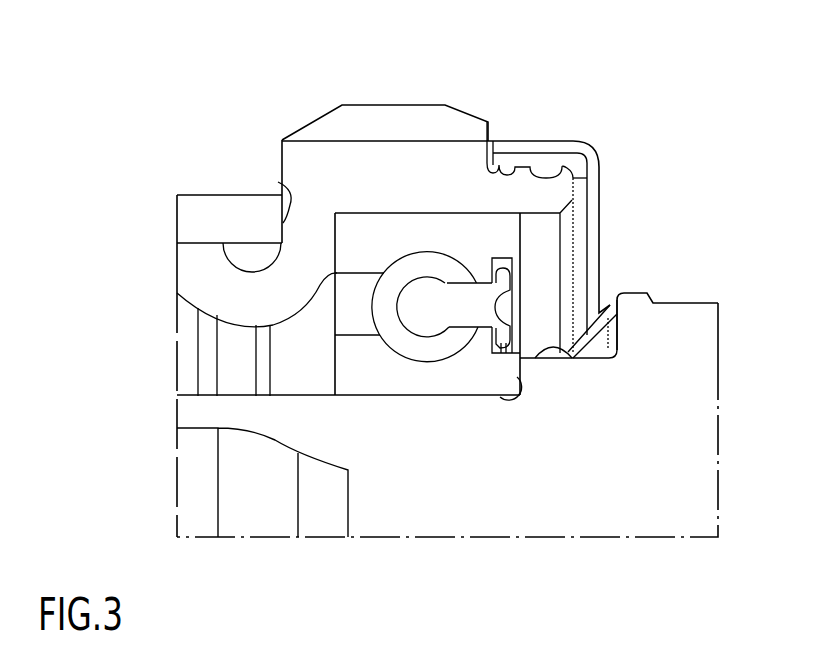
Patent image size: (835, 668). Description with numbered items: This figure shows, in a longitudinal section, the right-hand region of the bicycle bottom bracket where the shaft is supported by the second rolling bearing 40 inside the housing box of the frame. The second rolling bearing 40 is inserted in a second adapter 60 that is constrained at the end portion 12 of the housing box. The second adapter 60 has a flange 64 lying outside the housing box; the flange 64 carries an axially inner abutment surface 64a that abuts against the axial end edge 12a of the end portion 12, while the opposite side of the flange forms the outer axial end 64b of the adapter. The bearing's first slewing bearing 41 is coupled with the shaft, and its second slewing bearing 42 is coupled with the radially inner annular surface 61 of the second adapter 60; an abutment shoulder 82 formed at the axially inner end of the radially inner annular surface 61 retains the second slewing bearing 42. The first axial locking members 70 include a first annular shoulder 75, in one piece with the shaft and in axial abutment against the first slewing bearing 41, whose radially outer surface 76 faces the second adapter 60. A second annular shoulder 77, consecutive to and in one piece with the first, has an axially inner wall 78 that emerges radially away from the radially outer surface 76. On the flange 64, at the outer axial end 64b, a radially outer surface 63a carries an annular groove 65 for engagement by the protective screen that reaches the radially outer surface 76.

The end portion of the housing box 12 is at (188, 222).
The axial end edge 12a is at (227, 225).
The abutment shoulder 82 is at (337, 263).
The flange 64 is at (313, 165).
The axially inner abutment surface 64a is at (278, 182).
The outer axial end 64b is at (563, 185).
The second adapter 60 is at (430, 105).
The radially inner annular surface 61 is at (382, 207).
The second slewing bearing 42 is at (352, 238).
The annular groove 65 is at (495, 148).
The radially outer surface 63a is at (563, 165).
The second rolling bearing 40 is at (440, 398).
The first slewing bearing 41 is at (363, 370).
The first annular shoulder 75 is at (605, 465).
The radially outer surface 76 is at (572, 358).
The second annular shoulder 77 is at (698, 342).
The axially inner wall 78 is at (620, 333).
The first axial locking members 70 is at (712, 428).